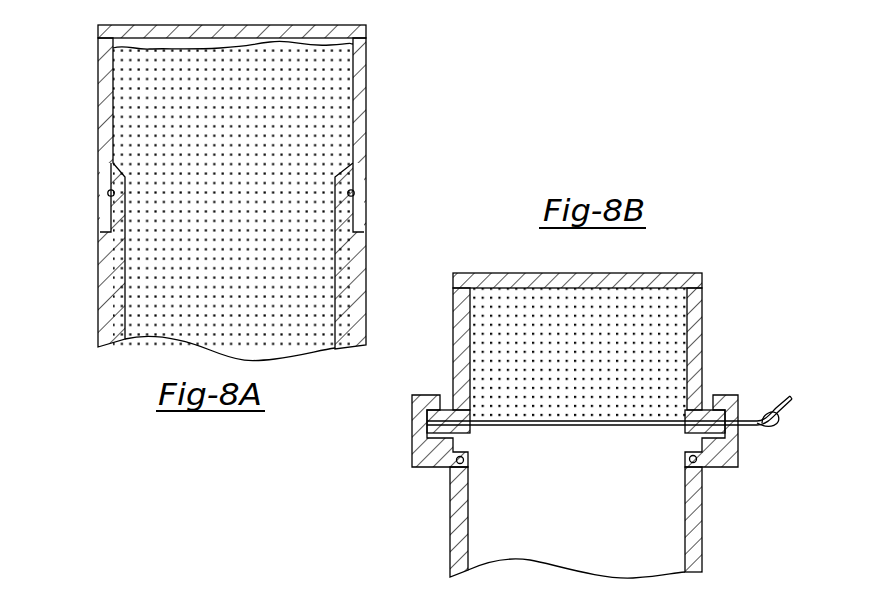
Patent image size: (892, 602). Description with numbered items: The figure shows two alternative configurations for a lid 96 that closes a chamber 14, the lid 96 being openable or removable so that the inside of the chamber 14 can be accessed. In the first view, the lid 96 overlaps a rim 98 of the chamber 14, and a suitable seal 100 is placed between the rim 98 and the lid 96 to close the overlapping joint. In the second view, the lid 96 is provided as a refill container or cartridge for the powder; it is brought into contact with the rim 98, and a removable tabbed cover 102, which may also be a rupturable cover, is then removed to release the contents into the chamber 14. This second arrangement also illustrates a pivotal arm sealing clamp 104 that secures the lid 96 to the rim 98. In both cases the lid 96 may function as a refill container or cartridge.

In FIG. 8A, the chamber 14 is at (348, 264).
In FIG. 8B, the chamber 14 is at (700, 545).
In FIG. 8A, the lid 96 is at (358, 73).
In FIG. 8B, the lid 96 is at (697, 310).
In FIG. 8A, the rim 98 is at (109, 204).
In FIG. 8B, the rim 98 is at (426, 434).
In FIG. 8A, the seal 100 is at (354, 193).
In FIG. 8B, the removable tabbed cover 102 is at (764, 414).
In FIG. 8B, the pivotal arm sealing clamp 104 is at (740, 470).